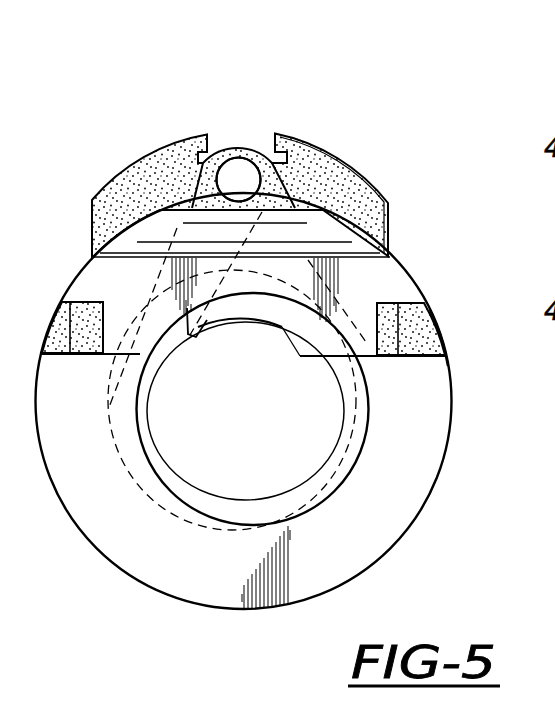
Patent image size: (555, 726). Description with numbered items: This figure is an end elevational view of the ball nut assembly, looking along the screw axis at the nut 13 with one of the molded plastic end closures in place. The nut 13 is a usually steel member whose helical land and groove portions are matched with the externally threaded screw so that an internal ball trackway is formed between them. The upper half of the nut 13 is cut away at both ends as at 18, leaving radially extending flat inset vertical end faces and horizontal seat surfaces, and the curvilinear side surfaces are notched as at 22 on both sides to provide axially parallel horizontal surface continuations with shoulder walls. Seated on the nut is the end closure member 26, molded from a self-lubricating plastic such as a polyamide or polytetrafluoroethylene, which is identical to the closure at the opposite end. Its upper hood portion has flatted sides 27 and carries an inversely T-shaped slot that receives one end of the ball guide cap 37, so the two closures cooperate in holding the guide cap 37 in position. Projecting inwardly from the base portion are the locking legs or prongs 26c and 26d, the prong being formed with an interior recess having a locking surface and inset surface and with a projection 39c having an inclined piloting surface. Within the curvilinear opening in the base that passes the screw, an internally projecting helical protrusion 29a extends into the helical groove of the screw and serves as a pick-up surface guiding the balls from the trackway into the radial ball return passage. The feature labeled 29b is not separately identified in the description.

The nut 13 is at (432, 447).
The cut away 18 is at (114, 354).
The notch 22 is at (402, 268).
The end closure member 26 is at (339, 156).
The prong 26c is at (59, 322).
The prong 26d is at (441, 334).
The flatted sides 27 is at (390, 226).
The helical protrusion 29a is at (283, 328).
The bore key notch 29b is at (195, 322).
The ball guide cap 37 is at (247, 138).
The projection 39c is at (422, 324).